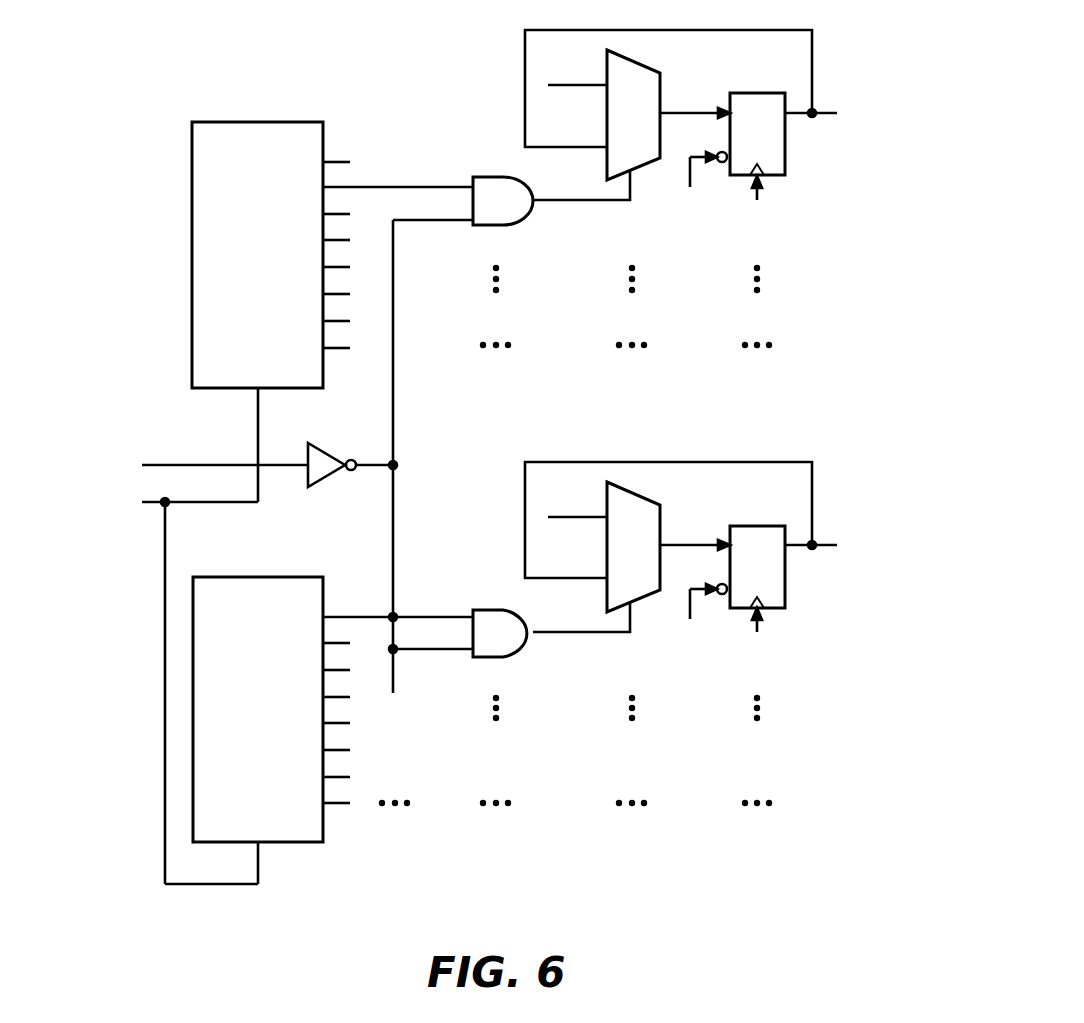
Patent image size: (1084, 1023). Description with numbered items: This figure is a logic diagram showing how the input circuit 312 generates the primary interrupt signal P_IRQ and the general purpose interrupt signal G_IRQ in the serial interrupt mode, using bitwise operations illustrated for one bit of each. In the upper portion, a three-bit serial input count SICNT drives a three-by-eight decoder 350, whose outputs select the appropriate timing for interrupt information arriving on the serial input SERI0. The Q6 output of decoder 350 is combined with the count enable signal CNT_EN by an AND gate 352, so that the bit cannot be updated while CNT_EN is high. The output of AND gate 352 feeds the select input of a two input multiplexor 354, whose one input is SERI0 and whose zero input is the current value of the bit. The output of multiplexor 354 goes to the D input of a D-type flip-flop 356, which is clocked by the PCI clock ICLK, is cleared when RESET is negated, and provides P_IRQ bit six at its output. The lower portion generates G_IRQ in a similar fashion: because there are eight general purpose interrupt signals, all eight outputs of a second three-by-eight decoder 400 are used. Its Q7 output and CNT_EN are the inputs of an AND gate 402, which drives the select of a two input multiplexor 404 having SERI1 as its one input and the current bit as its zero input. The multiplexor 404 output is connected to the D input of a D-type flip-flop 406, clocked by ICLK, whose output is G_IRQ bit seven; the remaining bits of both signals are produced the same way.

The input circuit 312 is at (758, 886).
The 3x8 decoder 350 is at (300, 122).
The AND gate 352 is at (633, 60).
The two input multiplexor 354 is at (500, 225).
The D-type flip-flop 356 is at (786, 163).
The 3x8 decoder 400 is at (300, 577).
The AND gate 402 is at (500, 657).
The two input multiplexor 404 is at (633, 492).
The D-type flip-flop 406 is at (786, 596).